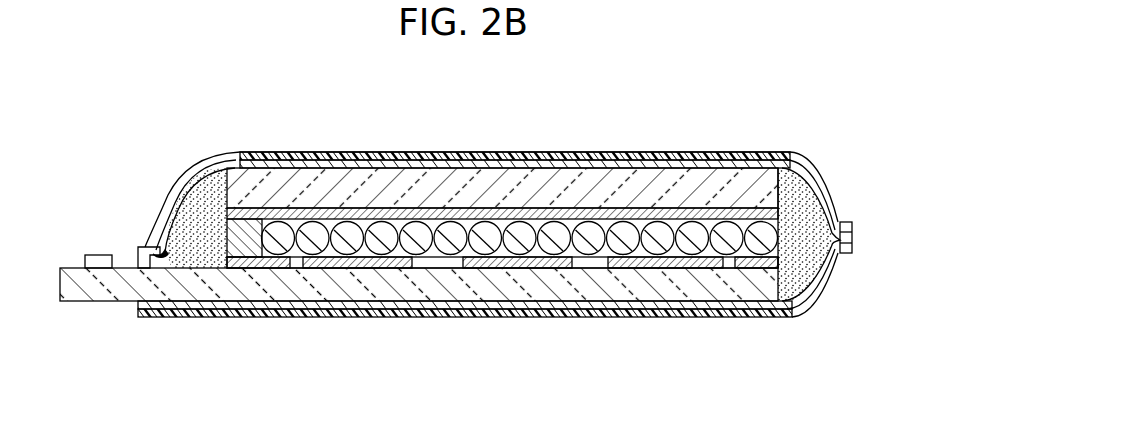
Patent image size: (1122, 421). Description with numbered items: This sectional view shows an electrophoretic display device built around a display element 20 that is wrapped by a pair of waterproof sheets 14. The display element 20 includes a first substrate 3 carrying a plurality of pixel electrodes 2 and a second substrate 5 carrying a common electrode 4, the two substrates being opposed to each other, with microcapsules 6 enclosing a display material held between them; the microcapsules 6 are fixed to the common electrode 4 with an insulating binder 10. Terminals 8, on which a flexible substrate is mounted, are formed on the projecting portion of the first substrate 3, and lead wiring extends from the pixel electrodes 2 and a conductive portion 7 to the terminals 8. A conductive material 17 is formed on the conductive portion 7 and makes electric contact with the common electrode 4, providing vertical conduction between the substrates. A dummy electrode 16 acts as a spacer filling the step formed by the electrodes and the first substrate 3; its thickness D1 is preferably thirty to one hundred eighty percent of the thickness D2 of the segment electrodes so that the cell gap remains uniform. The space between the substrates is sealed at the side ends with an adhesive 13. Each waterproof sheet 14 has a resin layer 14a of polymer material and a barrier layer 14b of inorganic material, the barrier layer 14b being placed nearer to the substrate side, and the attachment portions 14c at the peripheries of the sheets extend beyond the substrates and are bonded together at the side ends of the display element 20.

The pixel electrodes 2 is at (637, 300).
The first substrate 3 is at (790, 302).
The common electrode 4 is at (688, 220).
The second substrate 5 is at (742, 185).
The microcapsules 6 is at (542, 262).
The conductive portion 7 is at (265, 266).
The terminals 8 is at (100, 255).
The binder 10 is at (470, 262).
The adhesive 13 is at (203, 202).
The waterproof sheets 14 is at (366, 93).
The resin layer 14a is at (347, 156).
The barrier layer 14b is at (290, 163).
The attachment portions 14c is at (842, 222).
The dummy electrode 16 is at (295, 263).
The conductive material 17 is at (245, 262).
The display element 20 is at (580, 146).
The thickness of the dummy electrode D1 is at (760, 230).
The thickness of the segment electrodes D2 is at (692, 232).